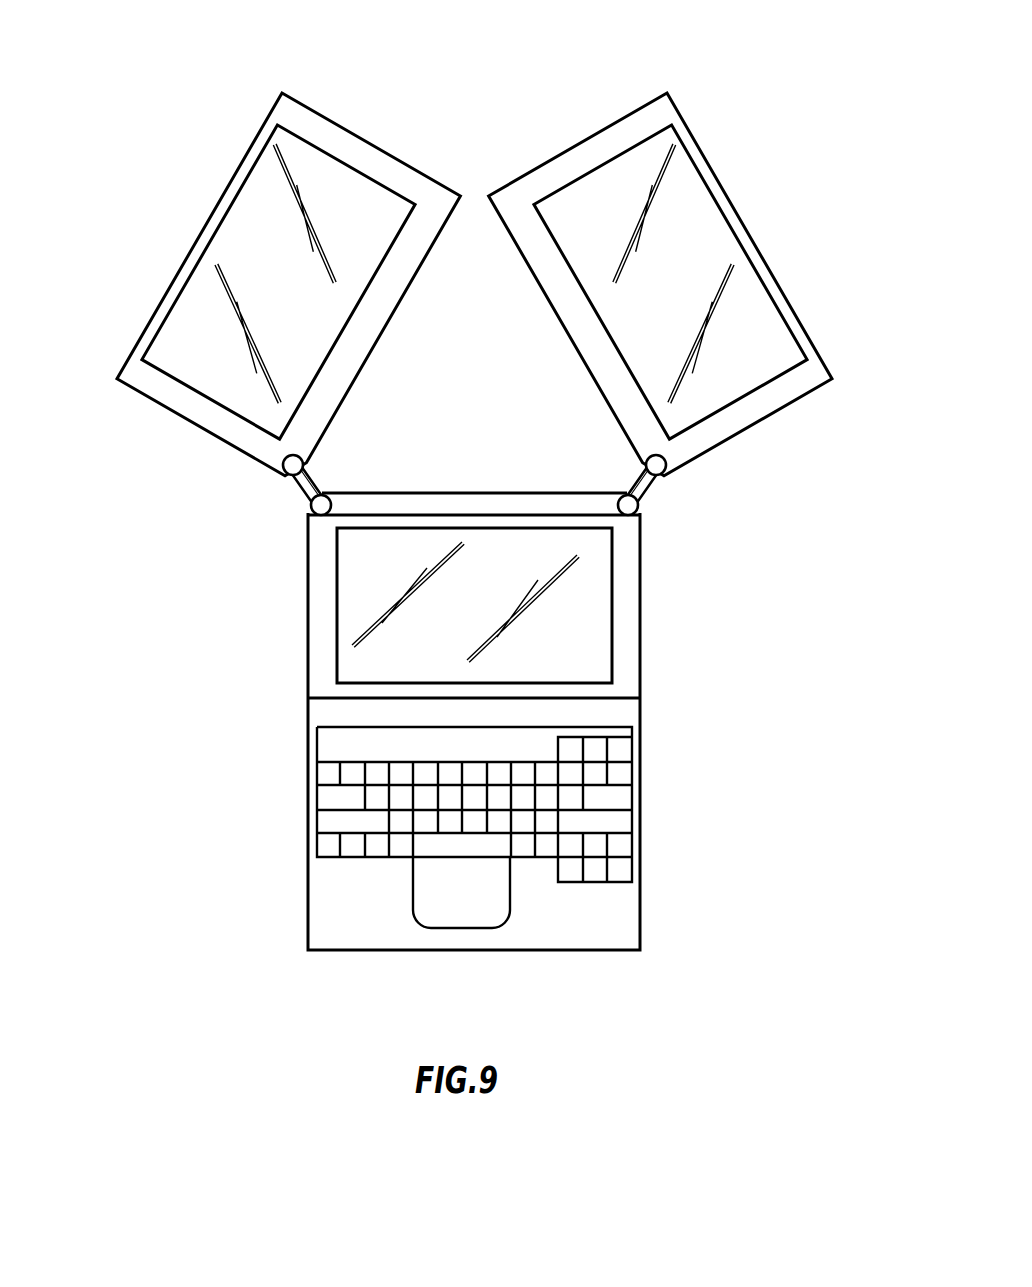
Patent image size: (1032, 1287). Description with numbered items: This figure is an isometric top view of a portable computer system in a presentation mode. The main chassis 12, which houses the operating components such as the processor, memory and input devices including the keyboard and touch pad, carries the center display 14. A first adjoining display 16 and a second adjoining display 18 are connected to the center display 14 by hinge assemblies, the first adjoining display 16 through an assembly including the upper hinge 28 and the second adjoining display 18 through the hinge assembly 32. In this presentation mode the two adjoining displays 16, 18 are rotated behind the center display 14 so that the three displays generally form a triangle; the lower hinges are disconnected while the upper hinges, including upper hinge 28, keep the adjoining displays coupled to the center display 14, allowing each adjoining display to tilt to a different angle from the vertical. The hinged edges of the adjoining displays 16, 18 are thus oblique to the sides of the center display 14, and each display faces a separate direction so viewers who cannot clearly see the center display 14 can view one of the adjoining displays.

The main chassis 12 is at (603, 923).
The center display 14 is at (642, 625).
The first adjoining display 16 is at (742, 218).
The second adjoining display 18 is at (212, 208).
The upper hinge 28 is at (645, 497).
The hinge assembly 32 is at (299, 489).